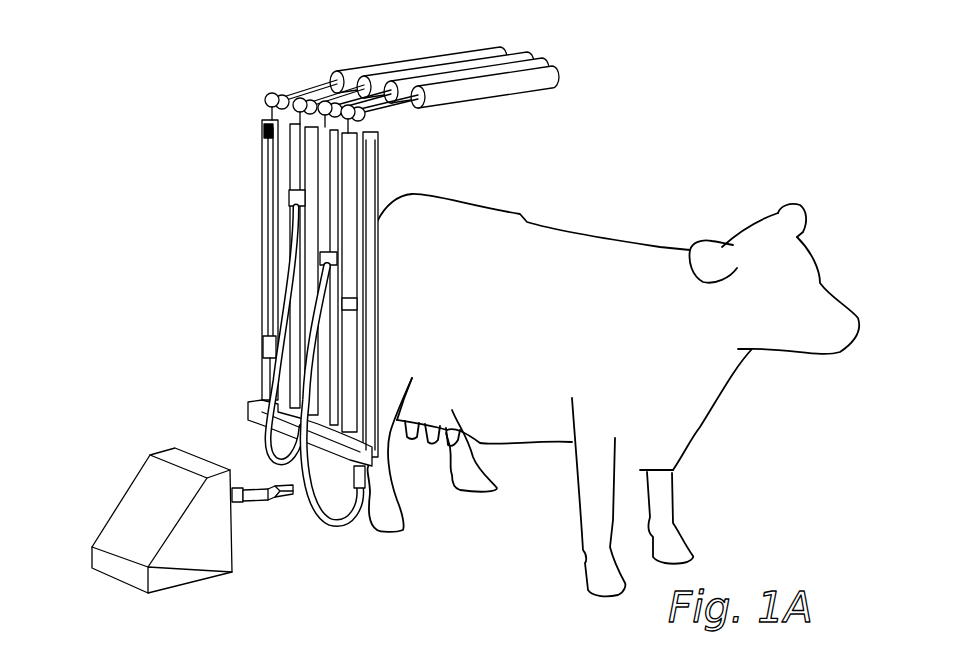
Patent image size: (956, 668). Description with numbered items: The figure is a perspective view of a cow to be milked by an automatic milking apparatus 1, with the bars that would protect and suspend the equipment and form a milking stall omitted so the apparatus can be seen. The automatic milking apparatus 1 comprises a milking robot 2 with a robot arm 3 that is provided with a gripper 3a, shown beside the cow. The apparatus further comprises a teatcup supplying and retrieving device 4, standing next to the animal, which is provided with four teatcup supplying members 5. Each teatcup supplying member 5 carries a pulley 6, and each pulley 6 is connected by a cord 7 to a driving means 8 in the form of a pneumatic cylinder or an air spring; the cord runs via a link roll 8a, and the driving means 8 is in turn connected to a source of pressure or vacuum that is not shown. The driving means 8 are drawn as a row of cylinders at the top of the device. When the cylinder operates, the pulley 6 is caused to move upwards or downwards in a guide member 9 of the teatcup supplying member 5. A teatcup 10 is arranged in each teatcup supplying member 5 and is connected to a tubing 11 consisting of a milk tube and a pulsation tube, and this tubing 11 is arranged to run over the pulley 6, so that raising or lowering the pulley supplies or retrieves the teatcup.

The automatic milking apparatus 1 is at (173, 262).
The milking robot 2 is at (122, 508).
The robot arm 3 is at (244, 508).
The gripper 3a is at (278, 505).
The teatcup supplying and retrieving device 4 is at (252, 208).
The teatcup supplying member 5 is at (366, 170).
The pulley 6 is at (262, 133).
The cord 7 is at (302, 98).
The driving means 8 is at (338, 71).
The link roll 8a is at (268, 93).
The guide member 9 is at (377, 352).
The teatcup 10 is at (265, 352).
The tubing 11 is at (335, 515).